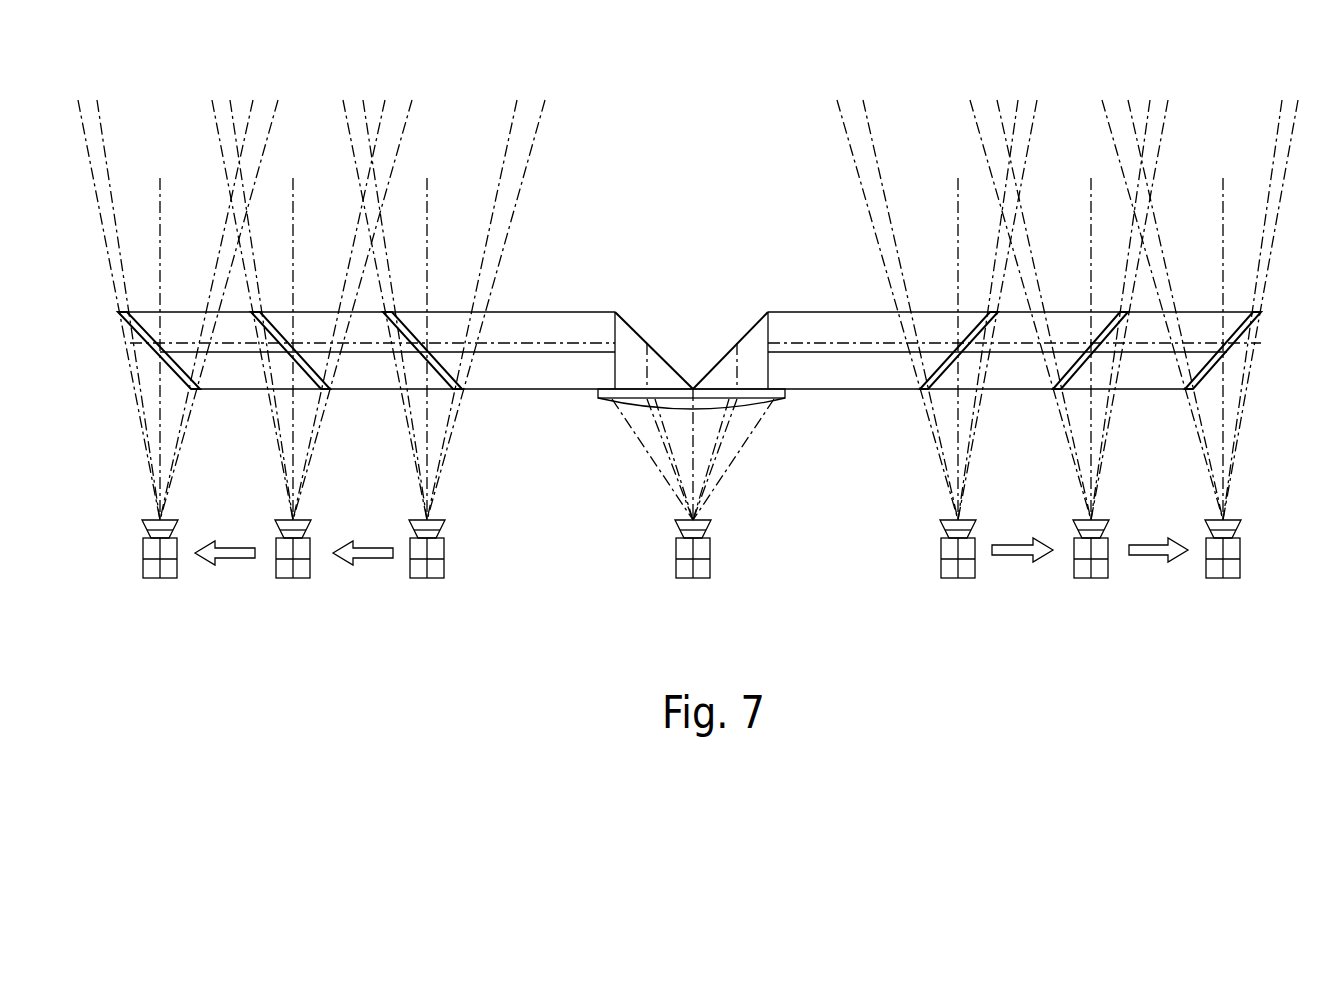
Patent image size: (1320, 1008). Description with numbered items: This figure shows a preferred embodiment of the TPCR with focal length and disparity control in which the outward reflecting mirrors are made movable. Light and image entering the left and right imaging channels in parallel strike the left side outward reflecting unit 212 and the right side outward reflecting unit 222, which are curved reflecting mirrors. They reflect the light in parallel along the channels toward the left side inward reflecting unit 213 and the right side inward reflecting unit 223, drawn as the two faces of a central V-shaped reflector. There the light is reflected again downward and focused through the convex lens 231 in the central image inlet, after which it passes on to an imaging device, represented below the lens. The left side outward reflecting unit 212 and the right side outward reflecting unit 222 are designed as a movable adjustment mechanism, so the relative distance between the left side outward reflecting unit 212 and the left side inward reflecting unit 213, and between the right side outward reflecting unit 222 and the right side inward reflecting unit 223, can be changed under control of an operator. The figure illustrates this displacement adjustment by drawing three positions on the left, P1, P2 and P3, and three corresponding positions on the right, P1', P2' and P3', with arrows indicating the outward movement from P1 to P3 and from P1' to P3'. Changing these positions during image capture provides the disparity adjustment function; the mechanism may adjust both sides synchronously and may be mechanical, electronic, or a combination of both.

The left side outward reflecting unit 212 is at (440, 330).
The left side inward reflecting unit 213 is at (637, 327).
The right side outward reflecting unit 222 is at (942, 338).
The right side inward reflecting unit 223 is at (753, 322).
The convex lens 231 is at (607, 400).
The position P1 is at (427, 612).
The position P2 is at (293, 612).
The position P3 is at (160, 612).
The position P1' is at (958, 610).
The position P2' is at (1090, 610).
The position P3' is at (1223, 610).